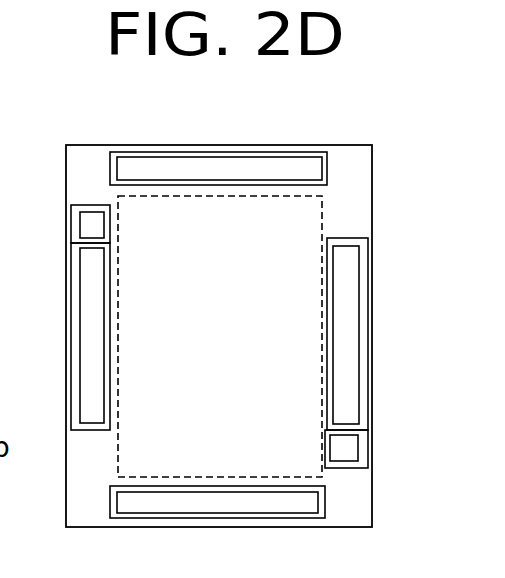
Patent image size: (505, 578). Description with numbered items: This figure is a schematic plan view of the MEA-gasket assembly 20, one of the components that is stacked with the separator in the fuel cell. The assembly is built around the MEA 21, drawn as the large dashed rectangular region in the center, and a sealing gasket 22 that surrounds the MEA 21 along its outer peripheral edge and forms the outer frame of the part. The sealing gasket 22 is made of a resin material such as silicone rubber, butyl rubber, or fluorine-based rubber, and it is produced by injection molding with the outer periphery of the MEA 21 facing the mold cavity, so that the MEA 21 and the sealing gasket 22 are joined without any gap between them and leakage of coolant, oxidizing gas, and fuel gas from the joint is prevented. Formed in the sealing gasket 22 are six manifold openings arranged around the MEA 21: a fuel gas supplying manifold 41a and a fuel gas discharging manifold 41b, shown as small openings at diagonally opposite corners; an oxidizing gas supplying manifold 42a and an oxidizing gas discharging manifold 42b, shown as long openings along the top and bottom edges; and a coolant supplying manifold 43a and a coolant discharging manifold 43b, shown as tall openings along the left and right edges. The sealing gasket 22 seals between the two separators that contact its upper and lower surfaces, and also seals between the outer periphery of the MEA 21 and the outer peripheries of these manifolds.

The MEA-gasket assembly 20 is at (95, 145).
The MEA 21 is at (288, 215).
The sealing gasket 22 is at (347, 160).
The fuel gas supplying manifold 41a is at (92, 224).
The fuel gas discharging manifold 41b is at (347, 450).
The oxidizing gas supplying manifold 42a is at (232, 175).
The oxidizing gas discharging manifold 42b is at (208, 508).
The coolant supplying manifold 43a is at (88, 340).
The coolant discharging manifold 43b is at (347, 338).